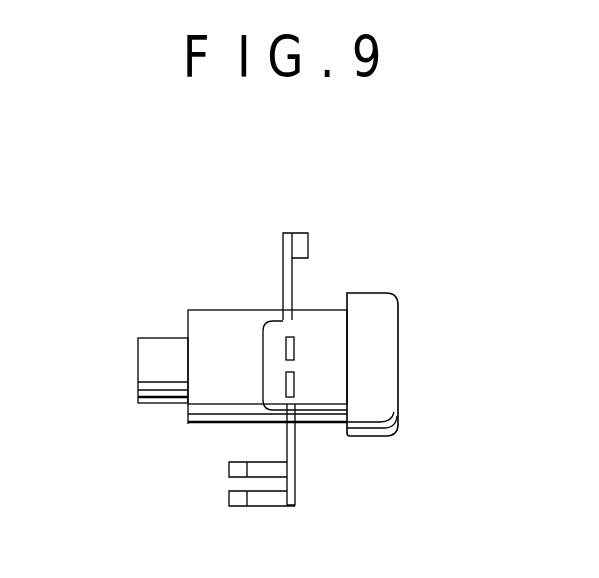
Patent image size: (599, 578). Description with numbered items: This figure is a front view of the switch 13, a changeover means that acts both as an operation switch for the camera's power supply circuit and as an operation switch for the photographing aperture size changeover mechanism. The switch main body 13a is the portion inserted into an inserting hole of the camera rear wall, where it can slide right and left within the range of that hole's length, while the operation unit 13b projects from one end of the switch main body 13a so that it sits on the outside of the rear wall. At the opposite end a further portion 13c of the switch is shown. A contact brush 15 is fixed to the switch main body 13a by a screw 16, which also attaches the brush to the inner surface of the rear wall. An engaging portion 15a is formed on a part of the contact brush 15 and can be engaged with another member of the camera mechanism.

The switch 13 is at (357, 208).
The switch main body 13a is at (325, 325).
The operation unit 13b is at (398, 365).
The connector portion 13c is at (160, 371).
The contact brush 15 is at (297, 454).
The engaging portion 15a is at (308, 247).
The screw 16 is at (262, 348).